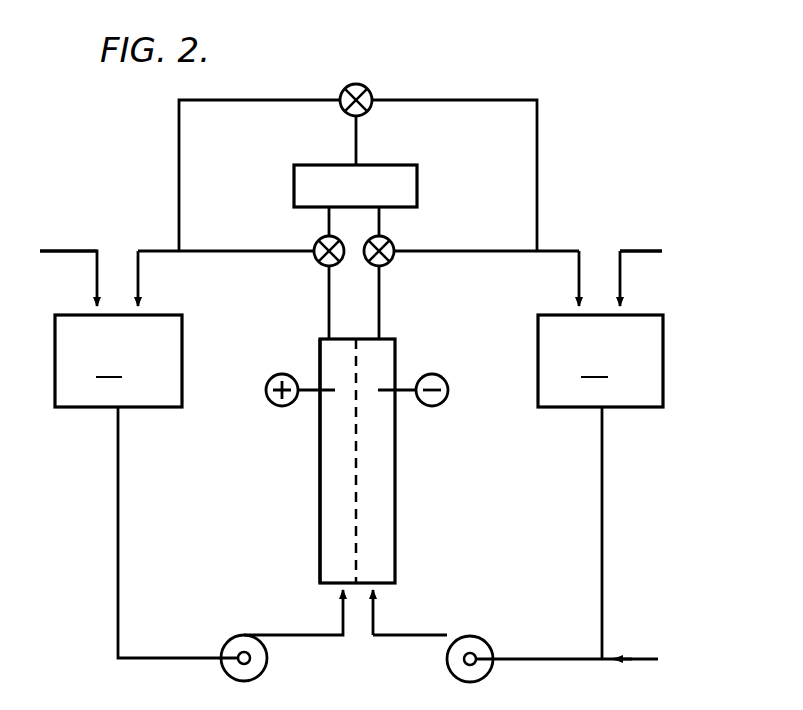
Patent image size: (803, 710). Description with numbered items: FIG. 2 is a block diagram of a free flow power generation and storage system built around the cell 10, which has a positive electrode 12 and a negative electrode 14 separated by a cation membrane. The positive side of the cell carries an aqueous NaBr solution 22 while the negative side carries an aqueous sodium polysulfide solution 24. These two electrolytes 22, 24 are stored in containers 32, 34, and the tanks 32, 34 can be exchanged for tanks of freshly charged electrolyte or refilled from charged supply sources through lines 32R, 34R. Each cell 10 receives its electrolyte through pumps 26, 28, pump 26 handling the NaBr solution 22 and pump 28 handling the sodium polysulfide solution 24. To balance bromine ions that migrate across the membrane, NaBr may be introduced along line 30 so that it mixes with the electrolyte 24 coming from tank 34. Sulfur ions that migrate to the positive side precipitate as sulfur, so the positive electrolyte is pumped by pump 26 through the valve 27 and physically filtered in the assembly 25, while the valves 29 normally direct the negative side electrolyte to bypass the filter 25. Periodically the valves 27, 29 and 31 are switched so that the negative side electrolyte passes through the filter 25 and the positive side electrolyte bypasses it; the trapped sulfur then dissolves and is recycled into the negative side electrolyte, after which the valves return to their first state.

The cell 10 is at (362, 461).
The positive electrode 12 is at (310, 382).
The negative electrode 14 is at (402, 382).
The aqueous NaBr solution 22 is at (327, 480).
The aqueous sodium polysulfide solution 24 is at (380, 446).
The filter assembly 25 is at (294, 176).
The pump 26 is at (232, 641).
The valve 27 is at (318, 259).
The pump 28 is at (482, 644).
The valve 29 is at (393, 262).
The line 30 is at (650, 650).
The valve 31 is at (356, 84).
The container 32 is at (118, 361).
The line 32R is at (62, 250).
The container 34 is at (600, 361).
The line 34R is at (652, 232).